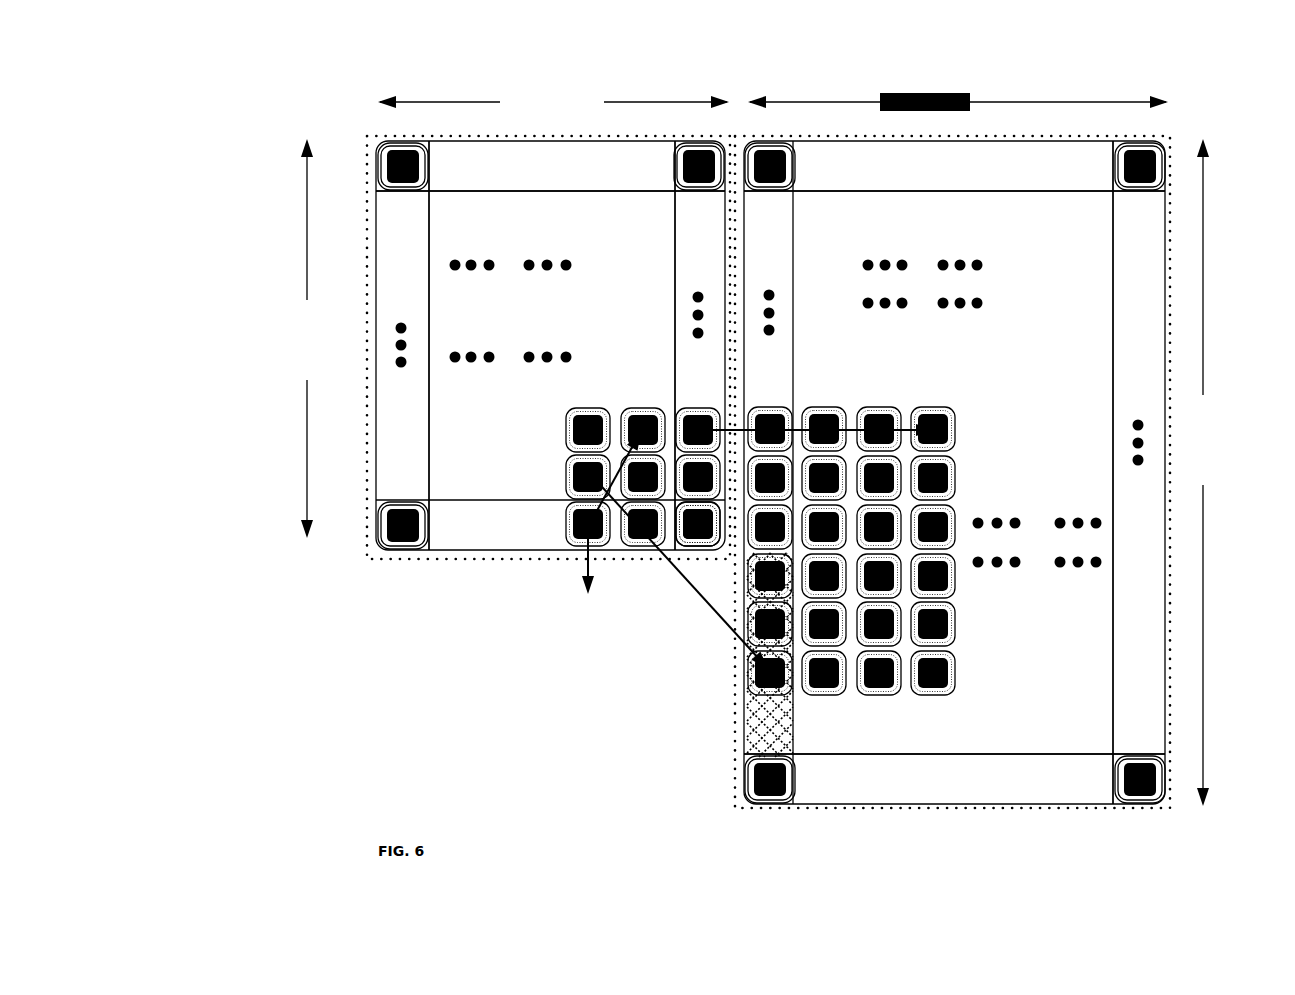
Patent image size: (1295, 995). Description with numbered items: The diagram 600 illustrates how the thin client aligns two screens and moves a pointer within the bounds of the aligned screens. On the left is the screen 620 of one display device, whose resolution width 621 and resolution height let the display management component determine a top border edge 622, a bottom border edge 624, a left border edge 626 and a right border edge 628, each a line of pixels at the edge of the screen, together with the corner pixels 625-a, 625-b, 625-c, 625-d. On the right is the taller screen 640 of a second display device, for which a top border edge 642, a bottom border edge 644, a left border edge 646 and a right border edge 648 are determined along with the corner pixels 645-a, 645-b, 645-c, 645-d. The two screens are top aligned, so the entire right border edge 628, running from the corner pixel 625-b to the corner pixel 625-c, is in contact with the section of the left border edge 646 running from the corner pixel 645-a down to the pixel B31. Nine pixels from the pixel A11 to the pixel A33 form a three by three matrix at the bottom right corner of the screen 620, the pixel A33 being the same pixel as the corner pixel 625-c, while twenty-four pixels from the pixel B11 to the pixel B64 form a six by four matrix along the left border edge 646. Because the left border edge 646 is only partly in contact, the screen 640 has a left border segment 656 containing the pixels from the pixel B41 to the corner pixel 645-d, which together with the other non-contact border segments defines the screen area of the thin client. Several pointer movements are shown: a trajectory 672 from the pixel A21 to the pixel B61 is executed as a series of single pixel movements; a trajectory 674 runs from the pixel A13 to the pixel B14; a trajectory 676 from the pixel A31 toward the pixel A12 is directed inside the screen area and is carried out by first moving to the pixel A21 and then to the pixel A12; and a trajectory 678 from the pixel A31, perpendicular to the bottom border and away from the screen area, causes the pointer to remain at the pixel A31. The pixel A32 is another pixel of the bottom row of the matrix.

The diagram 600 is at (235, 98).
The screen 620 is at (467, 445).
The width-a of first die 621 is at (553, 102).
The top border edge 622 is at (520, 191).
The bottom border edge 624 is at (498, 504).
The left border edge 626 is at (429, 331).
The right border edge 628 is at (675, 264).
The corner pixel 625-a is at (428, 165).
The corner pixel 625-b is at (676, 179).
The corner pixel 625-c is at (666, 571).
The corner pixel 625-d is at (428, 524).
The screen 640 is at (1083, 380).
The top border edge 642 is at (942, 191).
The bottom border edge 644 is at (1027, 764).
The left border edge 646 is at (793, 249).
The right border edge 648 is at (1124, 289).
The corner pixel 645-a is at (795, 165).
The corner pixel 645-b is at (1115, 179).
The corner pixel 645-c is at (1117, 782).
The corner pixel 645-d is at (795, 778).
The left border segment 656 is at (756, 738).
The trajectory 672 is at (695, 583).
The trajectory 674 is at (850, 424).
The trajectory 676 is at (614, 458).
The trajectory 678 is at (582, 564).
The pixel A11 is at (579, 408).
The pixel A12 is at (634, 408).
The pixel A13 is at (690, 408).
The pixel A21 is at (568, 480).
The pixel A31 is at (568, 522).
The pixel A32 is at (633, 530).
The pixel A33 is at (683, 537).
The pixel B11 is at (760, 408).
The pixel B14 is at (934, 408).
The pixel B31 is at (753, 533).
The pixel B41 is at (750, 563).
The pixel B61 is at (753, 663).
The pixel B64 is at (951, 671).